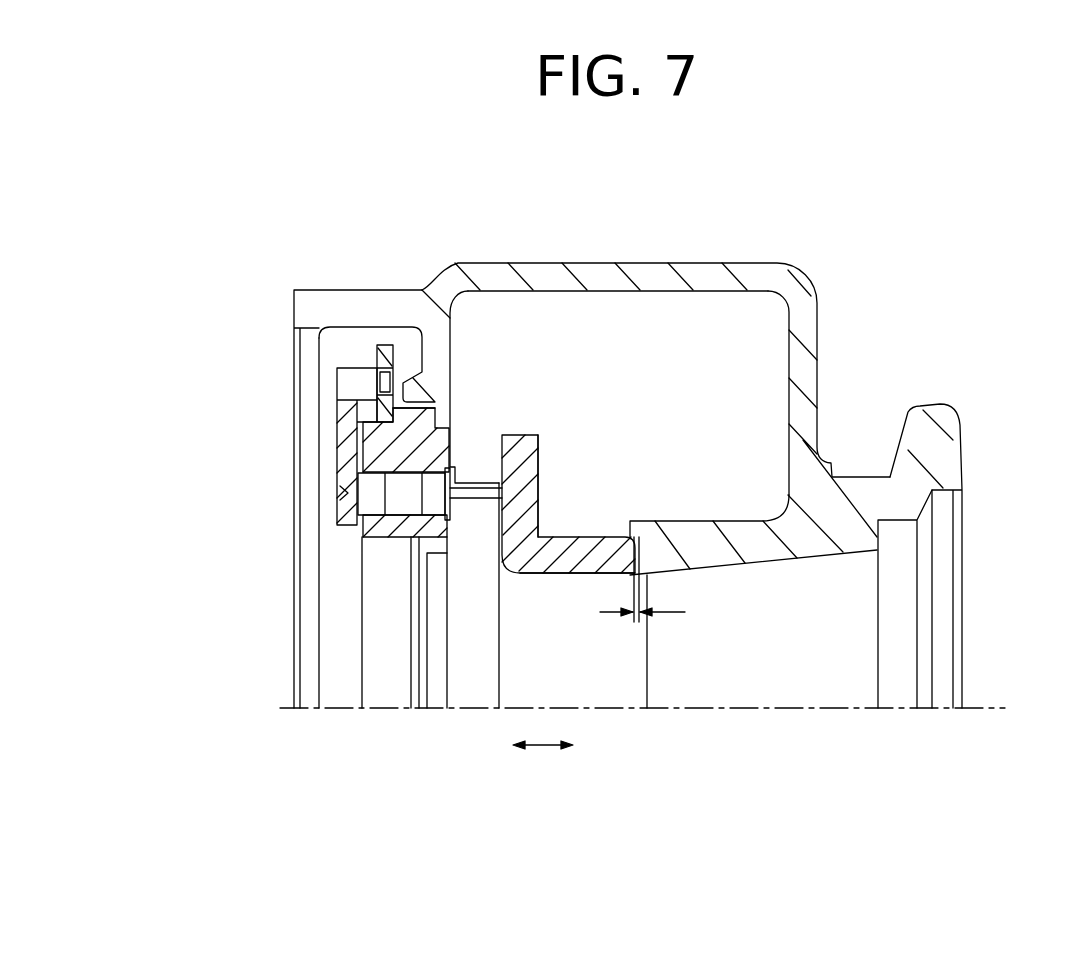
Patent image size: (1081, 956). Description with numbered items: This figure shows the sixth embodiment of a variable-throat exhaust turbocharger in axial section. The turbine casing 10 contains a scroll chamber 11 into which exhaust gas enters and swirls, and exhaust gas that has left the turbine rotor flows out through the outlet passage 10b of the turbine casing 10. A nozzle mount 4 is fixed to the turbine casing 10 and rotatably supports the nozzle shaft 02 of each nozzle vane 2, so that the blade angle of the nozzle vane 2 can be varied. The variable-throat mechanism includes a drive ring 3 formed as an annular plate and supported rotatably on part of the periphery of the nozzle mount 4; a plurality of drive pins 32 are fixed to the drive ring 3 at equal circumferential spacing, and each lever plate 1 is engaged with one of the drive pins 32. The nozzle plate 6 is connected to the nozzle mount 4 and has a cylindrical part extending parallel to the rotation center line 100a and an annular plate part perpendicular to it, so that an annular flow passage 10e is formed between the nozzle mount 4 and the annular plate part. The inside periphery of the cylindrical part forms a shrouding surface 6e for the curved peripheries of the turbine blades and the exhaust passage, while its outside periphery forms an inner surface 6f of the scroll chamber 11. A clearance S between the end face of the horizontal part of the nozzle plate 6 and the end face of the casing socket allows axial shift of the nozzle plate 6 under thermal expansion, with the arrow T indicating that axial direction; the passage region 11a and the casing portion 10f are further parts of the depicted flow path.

The lever plate 1 is at (338, 453).
The nozzle vane 2 is at (476, 495).
The drive ring 3 is at (384, 360).
The nozzle mount 4 is at (393, 532).
The nozzle shaft 02 is at (362, 527).
The nozzle plate 6 is at (524, 437).
The shrouding surface 6e is at (545, 577).
The inner surface of the scroll chamber 6f is at (574, 535).
The turbine casing 10 is at (800, 303).
The outlet passage 10b is at (855, 613).
The annular flow passage 10e is at (478, 465).
The flange portion of housing 10f is at (593, 575).
The scroll chamber 11 is at (647, 313).
The lower interior space 11a is at (682, 506).
The drive pin 32 is at (356, 377).
The rotation center line 100a is at (857, 718).
The clearance S is at (658, 584).
The axial direction T is at (555, 749).